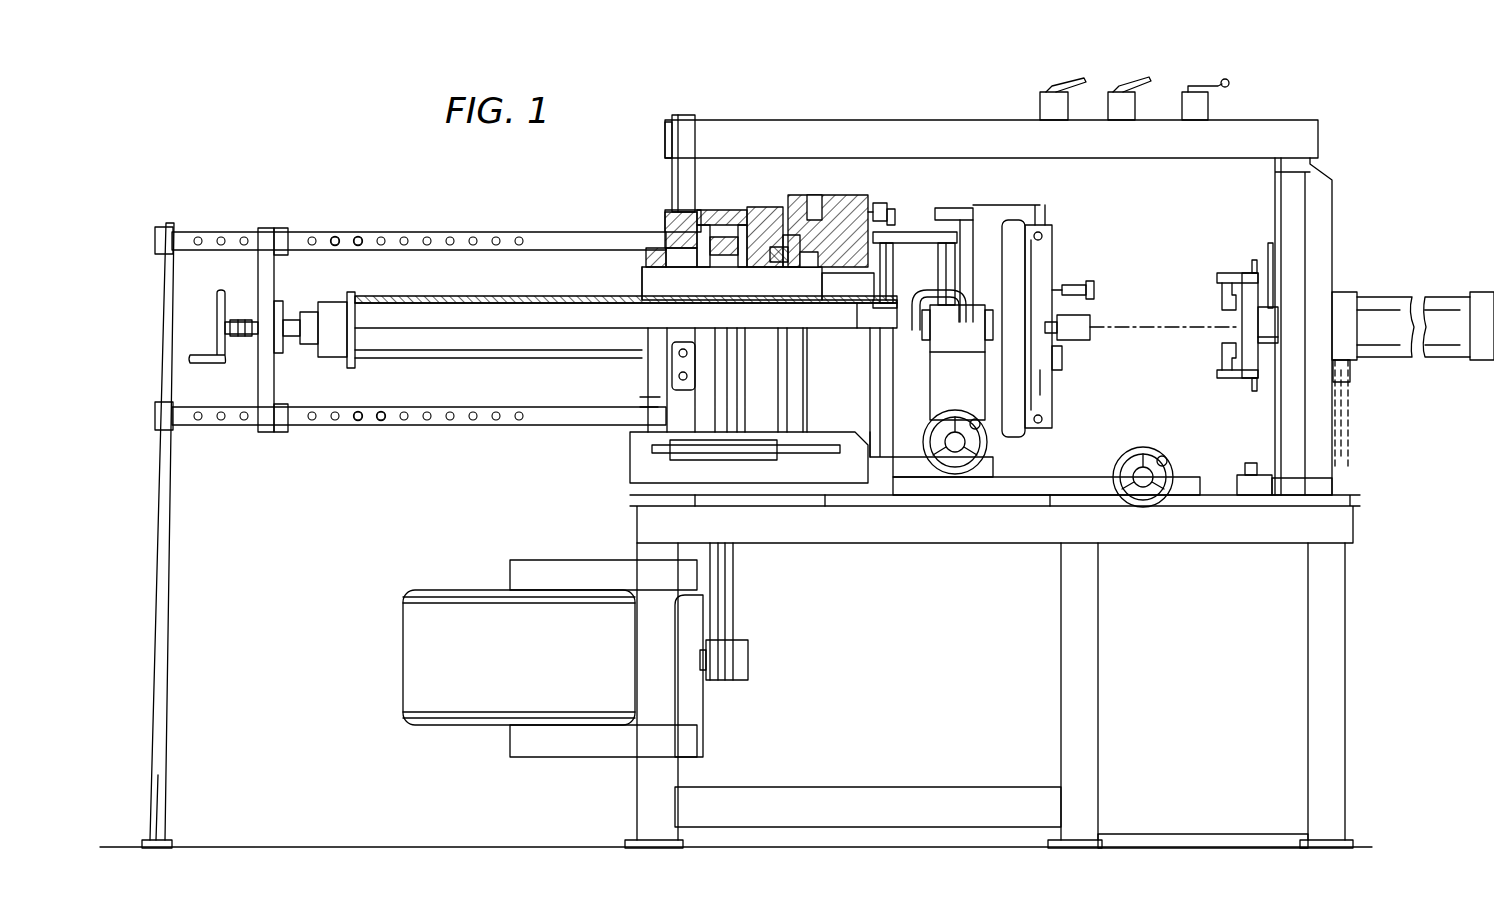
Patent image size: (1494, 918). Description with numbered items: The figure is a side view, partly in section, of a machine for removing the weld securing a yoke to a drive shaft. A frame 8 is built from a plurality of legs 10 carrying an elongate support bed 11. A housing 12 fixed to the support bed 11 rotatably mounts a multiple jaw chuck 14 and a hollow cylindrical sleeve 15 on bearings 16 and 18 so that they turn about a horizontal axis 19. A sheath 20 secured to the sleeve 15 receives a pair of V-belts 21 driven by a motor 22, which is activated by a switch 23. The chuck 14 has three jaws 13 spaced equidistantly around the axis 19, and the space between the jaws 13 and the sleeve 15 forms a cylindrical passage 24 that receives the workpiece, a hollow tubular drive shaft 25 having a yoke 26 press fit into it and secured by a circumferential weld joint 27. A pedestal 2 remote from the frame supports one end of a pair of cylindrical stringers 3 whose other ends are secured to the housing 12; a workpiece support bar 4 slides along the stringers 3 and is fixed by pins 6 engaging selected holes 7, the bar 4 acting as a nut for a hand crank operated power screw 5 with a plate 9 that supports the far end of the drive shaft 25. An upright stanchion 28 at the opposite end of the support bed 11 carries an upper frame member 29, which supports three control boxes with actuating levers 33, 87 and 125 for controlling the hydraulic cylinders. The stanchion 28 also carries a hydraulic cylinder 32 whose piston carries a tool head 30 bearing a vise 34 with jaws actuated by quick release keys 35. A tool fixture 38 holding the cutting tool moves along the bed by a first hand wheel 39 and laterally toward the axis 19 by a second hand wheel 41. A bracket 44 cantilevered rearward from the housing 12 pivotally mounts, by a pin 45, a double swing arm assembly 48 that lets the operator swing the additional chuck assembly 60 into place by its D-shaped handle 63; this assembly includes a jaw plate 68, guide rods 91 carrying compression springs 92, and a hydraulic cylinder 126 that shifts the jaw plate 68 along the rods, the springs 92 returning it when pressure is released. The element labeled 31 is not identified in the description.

The pedestal 2 is at (160, 592).
The cylindrical stringers 3 is at (485, 232).
The workpiece support bar 4 is at (272, 277).
The hand crank operated power screw 5 is at (218, 325).
The pins 6 is at (265, 242).
The holes 7 is at (358, 238).
The frame 8 is at (1362, 535).
The plate 9 is at (353, 291).
The legs 10 is at (645, 790).
The support bed 11 is at (840, 536).
The housing 12 is at (757, 209).
The jaws 13 is at (852, 286).
The multiple jaw chuck 14 is at (835, 206).
The hollow cylindrical sleeve 15 is at (644, 287).
The bearing 16 is at (662, 246).
The bearing 18 is at (779, 262).
The horizontal axis 19 is at (1146, 325).
The sheath 20 is at (718, 238).
The V-belts 21 is at (733, 590).
The motor 22 is at (522, 663).
The switch 23 is at (672, 372).
The cylindrical passage 24 is at (702, 297).
The drive shaft 25 is at (546, 297).
The yoke 26 is at (922, 293).
The weld joint 27 is at (896, 368).
The upright stanchion 28 is at (1322, 212).
The upper frame member 29 is at (1086, 153).
The tool head 30 is at (1250, 332).
The rod 31 is at (1268, 270).
The hydraulic cylinder 32 is at (1440, 298).
The actuating lever 33 is at (1222, 79).
The vise 34 is at (1220, 301).
The quick release keys 35 is at (1252, 265).
The tool fixture 38 is at (972, 392).
The first hand wheel 39 is at (1150, 456).
The second hand wheel 41 is at (955, 480).
The bracket 44 is at (894, 216).
The pin 45 is at (880, 204).
The double swing arm assembly 48 is at (963, 205).
The additional chuck assembly 60 is at (1056, 225).
The D-shaped handle 63 is at (1043, 384).
The jaw plate 68 is at (1063, 360).
The actuating lever 87 is at (1066, 84).
The guide rods 91 is at (1088, 286).
The compression spring 92 is at (1070, 287).
The actuating lever 125 is at (1140, 80).
The hydraulic cylinder 126 is at (1077, 338).